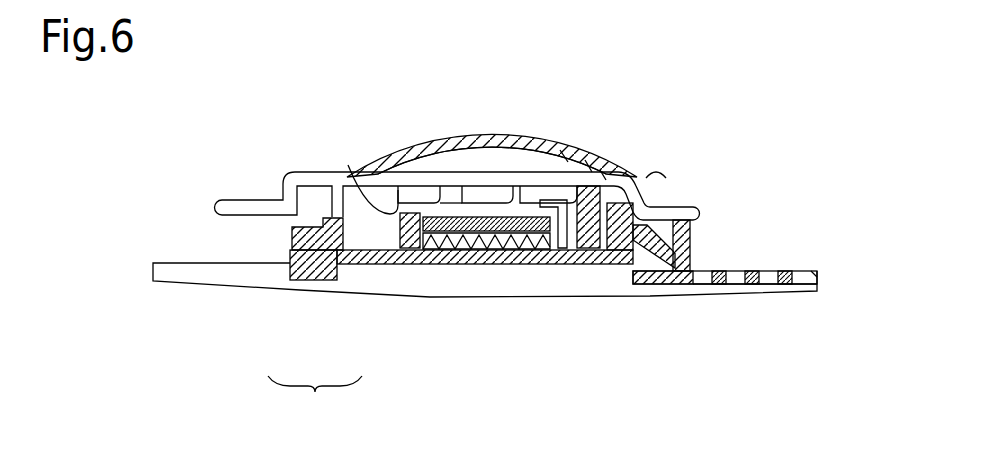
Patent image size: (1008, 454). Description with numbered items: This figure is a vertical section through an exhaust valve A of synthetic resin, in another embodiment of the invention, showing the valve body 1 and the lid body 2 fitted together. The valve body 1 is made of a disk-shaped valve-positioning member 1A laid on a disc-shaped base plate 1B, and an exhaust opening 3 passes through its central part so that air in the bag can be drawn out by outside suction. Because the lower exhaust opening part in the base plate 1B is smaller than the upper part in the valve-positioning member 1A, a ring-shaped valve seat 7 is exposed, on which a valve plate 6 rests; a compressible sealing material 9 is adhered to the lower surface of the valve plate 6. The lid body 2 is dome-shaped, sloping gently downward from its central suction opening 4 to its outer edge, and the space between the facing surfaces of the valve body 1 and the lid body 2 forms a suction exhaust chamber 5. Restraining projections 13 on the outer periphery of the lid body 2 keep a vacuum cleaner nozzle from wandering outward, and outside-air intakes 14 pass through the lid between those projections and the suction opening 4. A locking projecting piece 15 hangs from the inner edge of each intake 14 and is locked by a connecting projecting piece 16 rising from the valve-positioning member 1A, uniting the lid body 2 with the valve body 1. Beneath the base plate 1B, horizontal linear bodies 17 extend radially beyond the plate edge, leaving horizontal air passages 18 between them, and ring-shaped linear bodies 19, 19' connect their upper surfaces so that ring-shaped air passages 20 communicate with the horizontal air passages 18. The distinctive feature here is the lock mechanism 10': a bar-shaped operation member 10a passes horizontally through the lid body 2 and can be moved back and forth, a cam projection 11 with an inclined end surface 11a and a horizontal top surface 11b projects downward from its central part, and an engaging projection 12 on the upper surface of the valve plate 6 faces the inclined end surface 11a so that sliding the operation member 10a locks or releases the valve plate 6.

The valve body 1 is at (315, 398).
The valve-positioning member 1A is at (305, 289).
The base plate 1B is at (326, 290).
The lid body 2 is at (424, 150).
The exhaust opening 3 is at (486, 263).
The suction opening 4 is at (472, 148).
The suction exhaust chamber 5 is at (545, 162).
The valve plate 6 is at (530, 243).
The valve seat 7 is at (565, 252).
The sealing material 9 is at (478, 251).
The lock mechanism 10' is at (442, 135).
The operation member 10a is at (523, 180).
The cam projection 11 is at (433, 185).
The inclined end surface 11a is at (448, 253).
The horizontal top surface 11b is at (363, 198).
The engaging projection 12 is at (484, 192).
The restraining projection 13 is at (664, 176).
The outside-air intake 14 is at (597, 153).
The locking projecting piece 15 is at (592, 252).
The connecting projecting piece 16 is at (697, 228).
The horizontal linear body 17 is at (240, 291).
The horizontal air passage 18 is at (718, 291).
The ring-shaped linear body 19 is at (743, 259).
The ring-shaped linear body 19' is at (766, 238).
The ring-shaped air passage 20 is at (793, 285).
The exhaust valve A is at (705, 101).